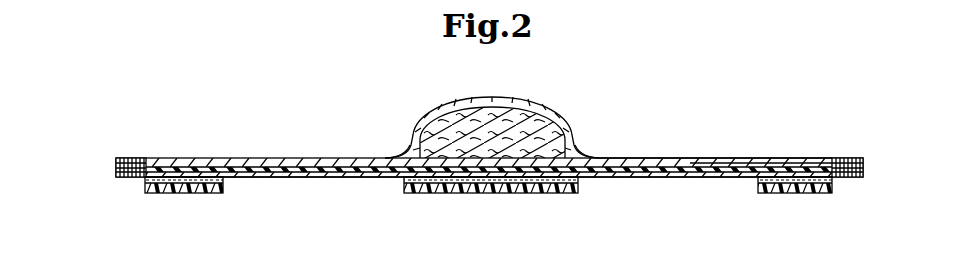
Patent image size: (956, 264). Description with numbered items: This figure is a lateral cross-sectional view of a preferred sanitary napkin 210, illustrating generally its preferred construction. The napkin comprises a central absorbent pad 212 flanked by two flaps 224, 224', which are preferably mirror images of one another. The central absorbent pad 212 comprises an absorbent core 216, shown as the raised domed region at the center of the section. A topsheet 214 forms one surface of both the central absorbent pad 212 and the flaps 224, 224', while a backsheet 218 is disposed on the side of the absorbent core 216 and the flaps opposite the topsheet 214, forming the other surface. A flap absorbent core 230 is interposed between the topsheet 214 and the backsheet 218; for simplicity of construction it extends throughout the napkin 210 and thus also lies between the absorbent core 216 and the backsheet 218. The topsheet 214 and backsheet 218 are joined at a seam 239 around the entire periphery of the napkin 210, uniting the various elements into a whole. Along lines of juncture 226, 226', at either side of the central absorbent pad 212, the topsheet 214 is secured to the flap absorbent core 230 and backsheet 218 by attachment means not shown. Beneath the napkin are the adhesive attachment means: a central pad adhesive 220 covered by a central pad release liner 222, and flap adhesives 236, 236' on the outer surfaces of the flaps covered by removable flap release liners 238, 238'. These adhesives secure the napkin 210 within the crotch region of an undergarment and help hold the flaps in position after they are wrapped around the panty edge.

The sanitary napkin 210 is at (694, 80).
The central absorbent pad 212 is at (427, 100).
The topsheet 214 is at (551, 104).
The absorbent core 216 is at (497, 110).
The backsheet 218 is at (372, 176).
The central pad adhesive 220 is at (576, 181).
The central pad release liner 222 is at (476, 193).
The flap 224 is at (489, 131).
The flap 224' is at (716, 122).
The line of juncture 226 is at (373, 134).
The line of juncture 226' is at (614, 135).
The flap absorbent core 230 is at (706, 157).
The flap adhesive 236 is at (223, 198).
The flap adhesive 236' is at (760, 198).
The flap release liner 238 is at (172, 205).
The flap release liner 238' is at (787, 205).
The seam 239 is at (128, 157).